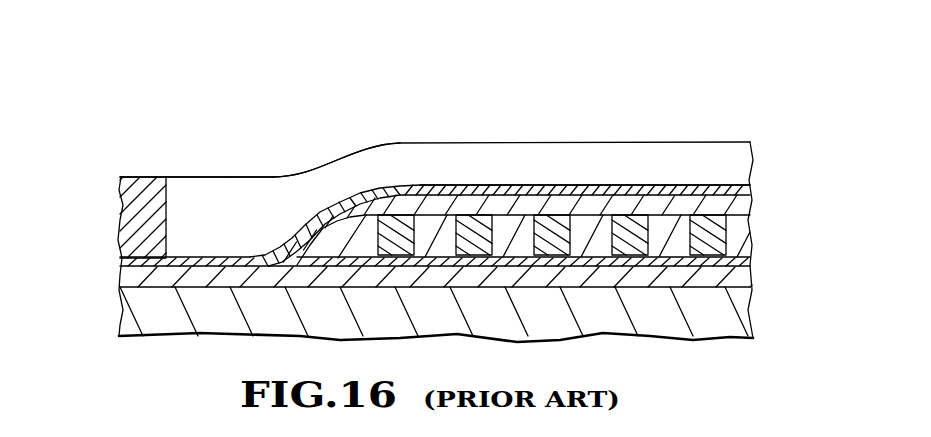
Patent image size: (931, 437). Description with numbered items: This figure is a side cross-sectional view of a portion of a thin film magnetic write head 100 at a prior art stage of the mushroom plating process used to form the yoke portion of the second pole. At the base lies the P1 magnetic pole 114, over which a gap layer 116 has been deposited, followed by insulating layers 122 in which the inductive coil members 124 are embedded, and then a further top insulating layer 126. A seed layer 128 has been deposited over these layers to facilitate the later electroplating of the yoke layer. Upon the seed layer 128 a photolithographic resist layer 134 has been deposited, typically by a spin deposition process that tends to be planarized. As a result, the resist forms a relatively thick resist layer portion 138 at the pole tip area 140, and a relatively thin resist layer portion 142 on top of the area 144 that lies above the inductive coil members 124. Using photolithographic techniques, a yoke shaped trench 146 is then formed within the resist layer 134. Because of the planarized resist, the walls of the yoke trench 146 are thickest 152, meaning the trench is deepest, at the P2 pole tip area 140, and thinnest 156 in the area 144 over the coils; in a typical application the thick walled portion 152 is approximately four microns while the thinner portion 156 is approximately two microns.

The thin film magnetic write head 100 is at (357, 63).
The P1 magnetic pole 114 is at (118, 305).
The gap layer 116 is at (118, 277).
The insulating layers 122 is at (747, 251).
The inductive coil members 124 is at (468, 220).
The top insulating layer 126 is at (745, 205).
The seed layer 128 is at (118, 259).
The photolithographic resist layer 134 is at (118, 200).
The relatively thick resist layer portion 138 is at (238, 162).
The pole tip area 140 is at (188, 162).
The relatively thin resist layer portion 142 is at (648, 103).
The area above the inductive coils 144 is at (563, 183).
The yoke shaped trench 146 is at (355, 173).
The thick walled portion 152 is at (210, 179).
The thinner portion 156 is at (507, 184).